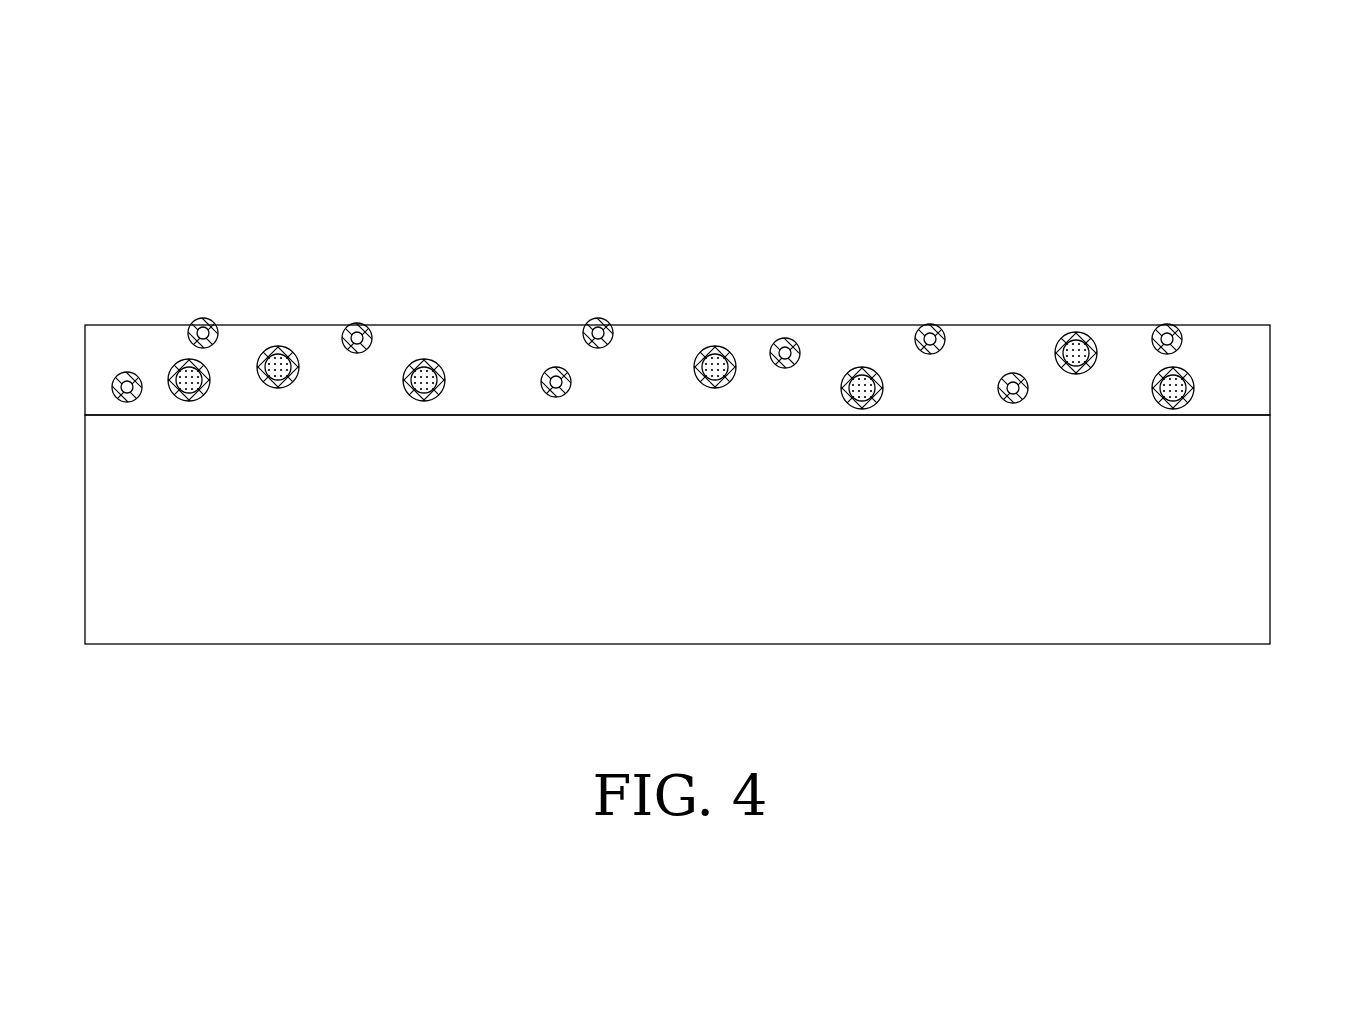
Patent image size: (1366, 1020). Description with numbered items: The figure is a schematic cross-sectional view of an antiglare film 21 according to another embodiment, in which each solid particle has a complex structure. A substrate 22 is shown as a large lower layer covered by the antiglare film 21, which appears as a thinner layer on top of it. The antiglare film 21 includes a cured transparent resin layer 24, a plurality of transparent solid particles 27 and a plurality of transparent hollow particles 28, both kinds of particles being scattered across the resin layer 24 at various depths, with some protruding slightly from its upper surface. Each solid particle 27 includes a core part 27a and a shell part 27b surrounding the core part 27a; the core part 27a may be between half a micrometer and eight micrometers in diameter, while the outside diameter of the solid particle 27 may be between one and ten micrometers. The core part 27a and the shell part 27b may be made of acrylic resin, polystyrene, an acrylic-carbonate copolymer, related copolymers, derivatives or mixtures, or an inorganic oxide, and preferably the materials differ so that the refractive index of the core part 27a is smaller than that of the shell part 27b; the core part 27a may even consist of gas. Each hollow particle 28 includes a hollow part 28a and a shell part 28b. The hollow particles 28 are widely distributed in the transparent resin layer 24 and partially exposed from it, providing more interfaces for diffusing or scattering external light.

The antiglare film 21 is at (1247, 150).
The substrate 22 is at (1252, 550).
The transparent resin layer 24 is at (1252, 375).
The solid particle 27 is at (663, 311).
The core part 27a is at (1110, 309).
The shell part 27b is at (1071, 336).
The hollow particle 28 is at (647, 302).
The hollow part 28a is at (964, 298).
The shell part 28b is at (924, 332).